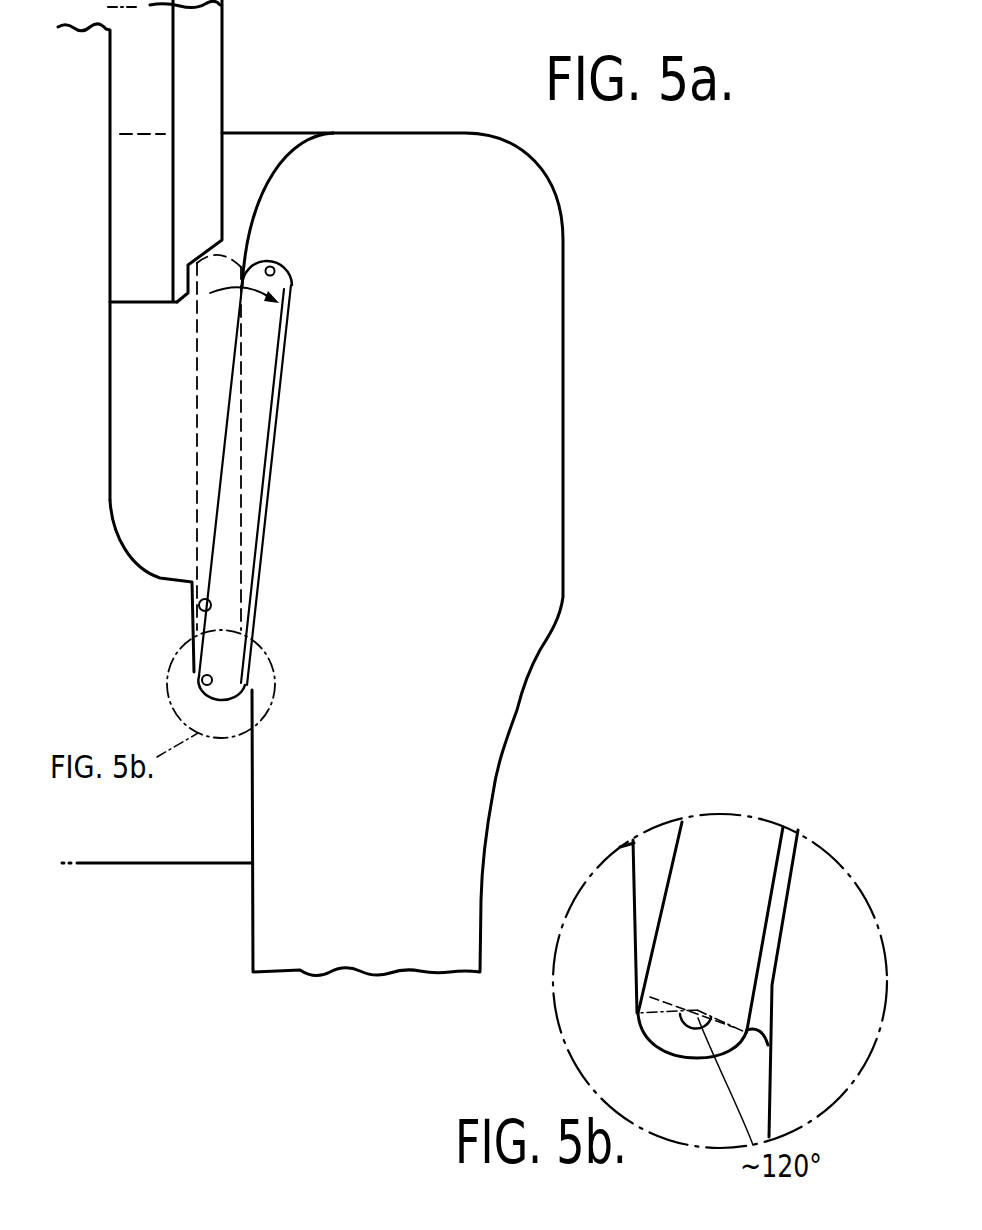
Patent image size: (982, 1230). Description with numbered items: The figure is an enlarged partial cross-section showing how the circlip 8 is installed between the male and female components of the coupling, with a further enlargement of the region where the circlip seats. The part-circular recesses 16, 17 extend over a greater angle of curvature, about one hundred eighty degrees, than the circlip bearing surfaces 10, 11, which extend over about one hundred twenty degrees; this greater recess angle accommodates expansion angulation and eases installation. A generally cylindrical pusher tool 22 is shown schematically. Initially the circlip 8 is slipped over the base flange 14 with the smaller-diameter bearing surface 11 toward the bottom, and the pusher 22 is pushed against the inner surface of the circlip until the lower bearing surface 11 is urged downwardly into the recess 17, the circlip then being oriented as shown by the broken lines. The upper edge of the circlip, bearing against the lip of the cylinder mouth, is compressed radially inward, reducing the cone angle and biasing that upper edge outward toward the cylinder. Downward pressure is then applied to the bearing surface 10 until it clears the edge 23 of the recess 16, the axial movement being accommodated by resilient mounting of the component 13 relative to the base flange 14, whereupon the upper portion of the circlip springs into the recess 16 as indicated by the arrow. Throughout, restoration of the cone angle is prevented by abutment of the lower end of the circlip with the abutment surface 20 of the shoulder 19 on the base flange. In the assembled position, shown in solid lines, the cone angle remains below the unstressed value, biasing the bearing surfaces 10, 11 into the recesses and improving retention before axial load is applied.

The circlip 8 is at (262, 350).
The bearing surface 10 is at (292, 277).
The bearing surface 11 is at (228, 693).
The component 13 is at (468, 408).
The base flange 14 is at (125, 833).
The part-circular recess 16 is at (277, 268).
The part-circular recess 17 is at (198, 677).
The shoulder 19 is at (187, 582).
The abutment surface 20 is at (200, 612).
The pusher tool 22 is at (190, 68).
The edge 23 is at (240, 287).